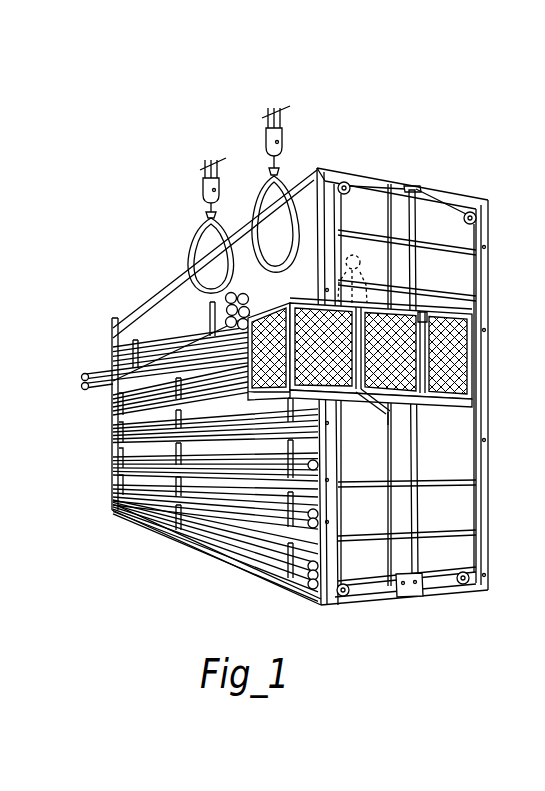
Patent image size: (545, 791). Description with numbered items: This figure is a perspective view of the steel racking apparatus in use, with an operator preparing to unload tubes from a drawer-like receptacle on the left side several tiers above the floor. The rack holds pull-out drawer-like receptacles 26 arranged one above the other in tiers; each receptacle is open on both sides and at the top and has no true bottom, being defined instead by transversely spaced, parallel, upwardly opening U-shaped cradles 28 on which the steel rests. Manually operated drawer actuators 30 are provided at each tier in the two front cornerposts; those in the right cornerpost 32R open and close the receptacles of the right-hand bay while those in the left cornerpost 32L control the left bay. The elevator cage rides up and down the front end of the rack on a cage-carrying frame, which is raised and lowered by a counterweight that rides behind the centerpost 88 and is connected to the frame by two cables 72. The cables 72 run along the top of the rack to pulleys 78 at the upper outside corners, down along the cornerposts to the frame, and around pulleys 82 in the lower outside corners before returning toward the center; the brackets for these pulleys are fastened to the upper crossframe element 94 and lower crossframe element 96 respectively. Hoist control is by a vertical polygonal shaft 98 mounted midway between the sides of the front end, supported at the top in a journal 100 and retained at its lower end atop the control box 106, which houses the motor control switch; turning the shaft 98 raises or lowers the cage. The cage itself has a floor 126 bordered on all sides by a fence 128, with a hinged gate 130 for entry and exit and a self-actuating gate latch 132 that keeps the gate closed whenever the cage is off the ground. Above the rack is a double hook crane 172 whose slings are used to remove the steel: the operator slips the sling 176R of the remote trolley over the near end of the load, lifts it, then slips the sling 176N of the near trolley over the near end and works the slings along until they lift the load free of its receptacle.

The drawer-like receptacles 26 is at (212, 310).
The cradles 28 is at (104, 393).
The drawer actuators 30 is at (326, 232).
The left cornerpost 32L is at (322, 182).
The right cornerpost 32R is at (489, 211).
The cables 72 is at (338, 502).
The pulleys 78 is at (350, 186).
The pulleys 82 is at (350, 592).
The centerpost 88 is at (418, 207).
The upper crossframe element 94 is at (445, 200).
The lower crossframe element 96 is at (432, 598).
The shaft 98 is at (414, 258).
The journal 100 is at (412, 187).
The control box 106 is at (398, 593).
The floor 126 is at (433, 400).
The fence 128 is at (478, 323).
The hinged gate 130 is at (428, 318).
The gate latch 132 is at (386, 412).
The double hook crane 172 is at (205, 185).
The sling of the near trolley 176N is at (253, 198).
The sling of the remote trolley 176R is at (188, 250).